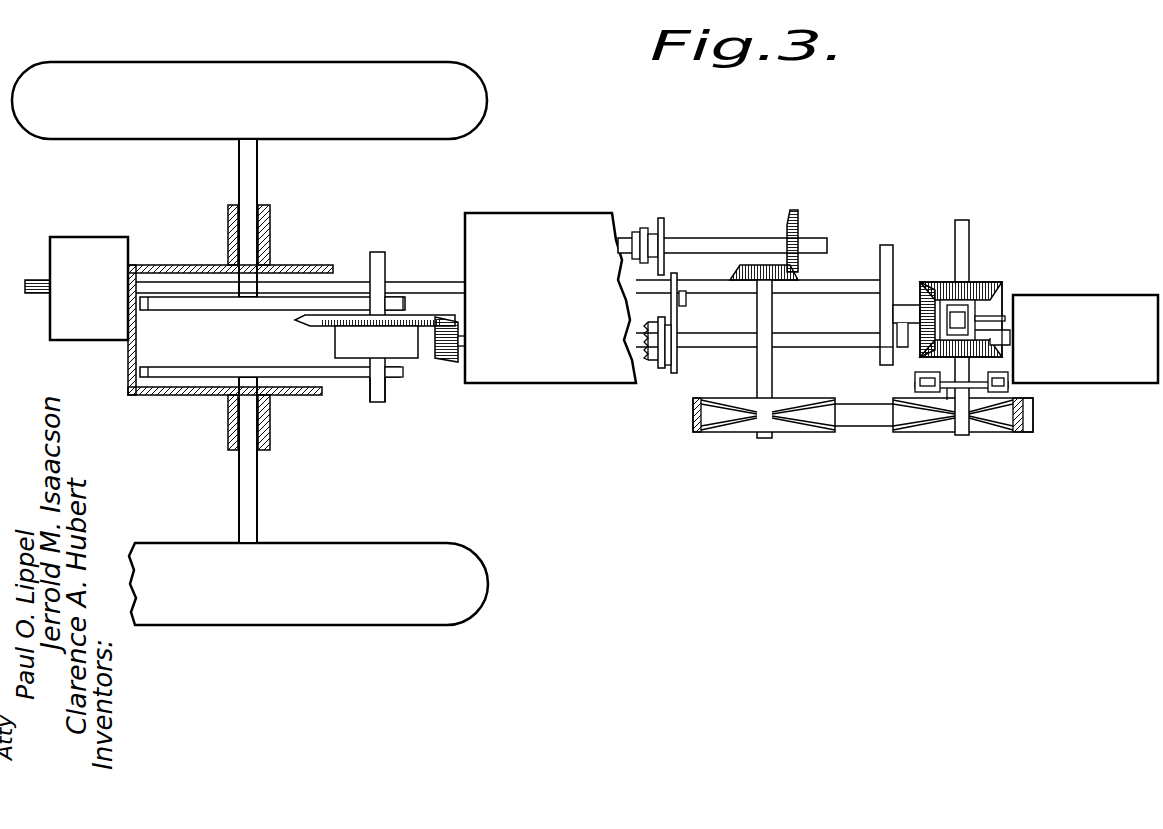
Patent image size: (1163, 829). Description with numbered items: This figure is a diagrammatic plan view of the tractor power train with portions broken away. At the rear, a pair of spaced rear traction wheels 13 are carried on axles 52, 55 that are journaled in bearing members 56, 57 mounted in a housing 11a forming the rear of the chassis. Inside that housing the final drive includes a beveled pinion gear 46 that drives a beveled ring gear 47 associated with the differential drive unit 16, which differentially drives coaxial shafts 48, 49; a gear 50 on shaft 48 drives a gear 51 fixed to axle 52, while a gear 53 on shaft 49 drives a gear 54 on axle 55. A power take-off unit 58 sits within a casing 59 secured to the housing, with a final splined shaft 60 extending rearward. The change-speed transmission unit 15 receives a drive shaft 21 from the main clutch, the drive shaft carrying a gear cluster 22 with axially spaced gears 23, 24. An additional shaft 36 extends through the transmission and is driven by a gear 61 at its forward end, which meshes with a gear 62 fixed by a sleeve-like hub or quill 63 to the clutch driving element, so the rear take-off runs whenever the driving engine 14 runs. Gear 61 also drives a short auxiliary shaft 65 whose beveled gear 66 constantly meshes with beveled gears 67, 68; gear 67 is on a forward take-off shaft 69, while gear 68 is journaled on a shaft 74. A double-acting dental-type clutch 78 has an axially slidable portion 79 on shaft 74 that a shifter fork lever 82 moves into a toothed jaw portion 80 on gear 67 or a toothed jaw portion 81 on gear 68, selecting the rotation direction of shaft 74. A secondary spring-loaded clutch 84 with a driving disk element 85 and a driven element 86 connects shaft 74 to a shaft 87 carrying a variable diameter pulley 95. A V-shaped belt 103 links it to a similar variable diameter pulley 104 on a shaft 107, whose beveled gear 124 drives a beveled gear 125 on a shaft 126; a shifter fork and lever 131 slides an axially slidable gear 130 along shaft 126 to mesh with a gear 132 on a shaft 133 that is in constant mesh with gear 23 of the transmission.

The housing 11a is at (230, 428).
The rear traction wheels 13 is at (430, 138).
The driving engine 14 is at (1122, 370).
The change-speed transmission unit 15 is at (598, 385).
The differential drive unit 16 is at (415, 358).
The drive shaft 21 is at (808, 343).
The gear cluster 22 is at (667, 378).
The gear 23 is at (678, 372).
The gear 24 is at (660, 370).
The additional shaft 36 is at (815, 283).
The beveled pinion gear 46 is at (450, 362).
The beveled ring gear 47 is at (425, 315).
The coaxial shaft 48 is at (395, 308).
The coaxial shaft 49 is at (400, 372).
The gear 50 is at (385, 295).
The gear 51 is at (333, 297).
The axle 52 is at (258, 178).
The gear 53 is at (367, 378).
The gear 54 is at (340, 378).
The axle 55 is at (258, 492).
The bearing member 56 is at (270, 205).
The bearing member 57 is at (270, 450).
The power take-off unit 58 is at (105, 225).
The casing 59 is at (70, 237).
The power take-off splined shaft 60 is at (32, 278).
The gear 61 is at (880, 297).
The gear 62 is at (880, 352).
The sleeve-like hub or quill 63 is at (900, 367).
The auxiliary shaft 65 is at (903, 303).
The beveled gear 66 is at (924, 292).
The beveled gear 67 is at (985, 290).
The beveled gear 68 is at (1000, 355).
The shaft 69 is at (968, 235).
The shaft 74 is at (1000, 368).
The double-acting dental-type clutch 78 is at (990, 310).
The axially slidable portion 79 is at (1010, 330).
The toothed jaw portion 80 is at (985, 308).
The toothed jaw portion 81 is at (980, 338).
The shifter fork lever 82 is at (1005, 318).
The secondary spring-loaded clutch 84 is at (910, 384).
The driving disk element 85 is at (947, 383).
The driven element 86 is at (1000, 390).
The shaft 87 is at (968, 435).
The variable diameter pulley 95 is at (1003, 432).
The V-shaped belt 103 is at (866, 426).
The variable diameter pulley 104 is at (812, 432).
The shaft 107 is at (758, 382).
The beveled gear 124 is at (735, 270).
The beveled gear 125 is at (798, 213).
The shaft 126 is at (718, 240).
The axially slidable gear 130 is at (664, 222).
The shifter fork and lever 131 is at (655, 232).
The gear 132 is at (686, 292).
The shaft 133 is at (632, 320).